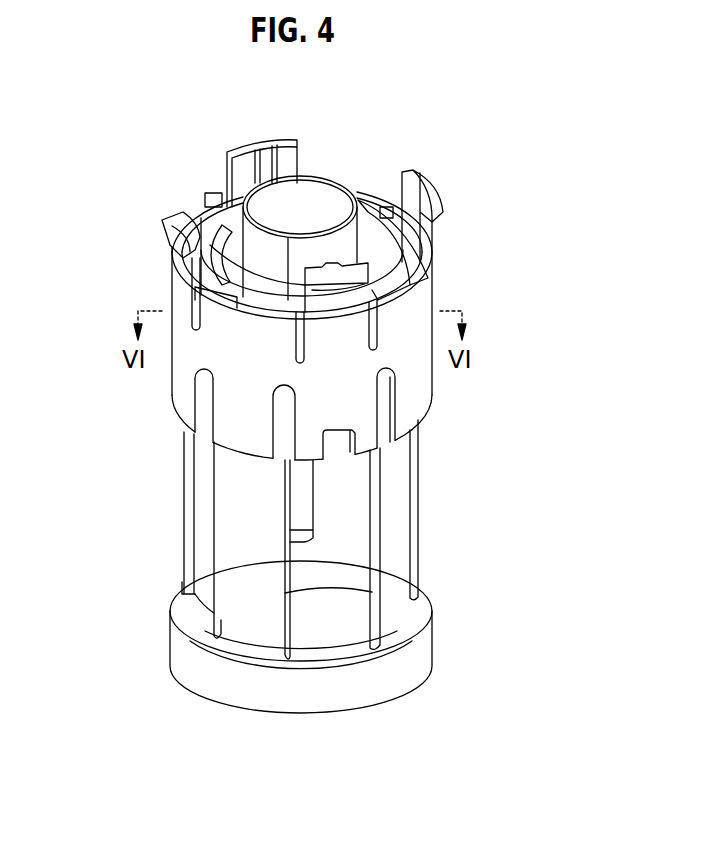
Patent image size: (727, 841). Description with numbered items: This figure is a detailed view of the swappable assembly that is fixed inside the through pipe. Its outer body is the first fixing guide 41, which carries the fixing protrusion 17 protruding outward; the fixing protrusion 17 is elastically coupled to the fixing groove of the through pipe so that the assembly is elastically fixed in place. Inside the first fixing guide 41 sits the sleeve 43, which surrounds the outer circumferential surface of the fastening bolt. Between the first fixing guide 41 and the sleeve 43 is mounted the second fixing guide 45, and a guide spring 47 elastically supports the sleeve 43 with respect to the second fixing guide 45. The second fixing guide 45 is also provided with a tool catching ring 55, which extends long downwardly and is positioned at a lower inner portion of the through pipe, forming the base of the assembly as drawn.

The fixing protrusion 17 is at (163, 225).
The first fixing guide 41 is at (425, 293).
The sleeve 43 is at (323, 198).
The second fixing guide 45 is at (400, 513).
The guide spring 47 is at (386, 257).
The tool catching ring 55 is at (316, 690).